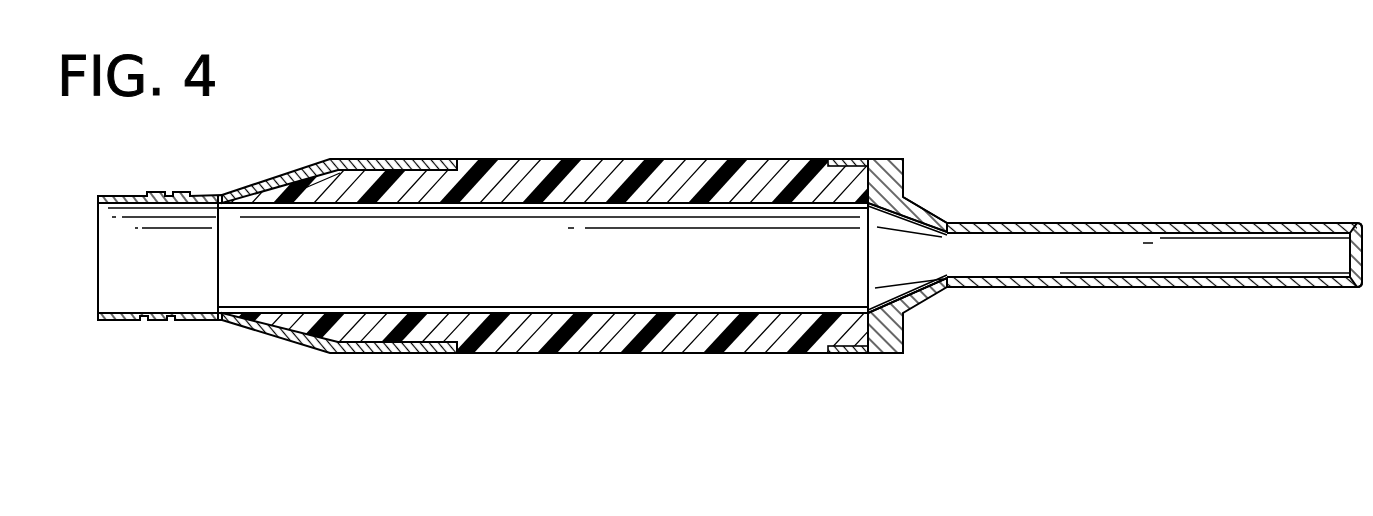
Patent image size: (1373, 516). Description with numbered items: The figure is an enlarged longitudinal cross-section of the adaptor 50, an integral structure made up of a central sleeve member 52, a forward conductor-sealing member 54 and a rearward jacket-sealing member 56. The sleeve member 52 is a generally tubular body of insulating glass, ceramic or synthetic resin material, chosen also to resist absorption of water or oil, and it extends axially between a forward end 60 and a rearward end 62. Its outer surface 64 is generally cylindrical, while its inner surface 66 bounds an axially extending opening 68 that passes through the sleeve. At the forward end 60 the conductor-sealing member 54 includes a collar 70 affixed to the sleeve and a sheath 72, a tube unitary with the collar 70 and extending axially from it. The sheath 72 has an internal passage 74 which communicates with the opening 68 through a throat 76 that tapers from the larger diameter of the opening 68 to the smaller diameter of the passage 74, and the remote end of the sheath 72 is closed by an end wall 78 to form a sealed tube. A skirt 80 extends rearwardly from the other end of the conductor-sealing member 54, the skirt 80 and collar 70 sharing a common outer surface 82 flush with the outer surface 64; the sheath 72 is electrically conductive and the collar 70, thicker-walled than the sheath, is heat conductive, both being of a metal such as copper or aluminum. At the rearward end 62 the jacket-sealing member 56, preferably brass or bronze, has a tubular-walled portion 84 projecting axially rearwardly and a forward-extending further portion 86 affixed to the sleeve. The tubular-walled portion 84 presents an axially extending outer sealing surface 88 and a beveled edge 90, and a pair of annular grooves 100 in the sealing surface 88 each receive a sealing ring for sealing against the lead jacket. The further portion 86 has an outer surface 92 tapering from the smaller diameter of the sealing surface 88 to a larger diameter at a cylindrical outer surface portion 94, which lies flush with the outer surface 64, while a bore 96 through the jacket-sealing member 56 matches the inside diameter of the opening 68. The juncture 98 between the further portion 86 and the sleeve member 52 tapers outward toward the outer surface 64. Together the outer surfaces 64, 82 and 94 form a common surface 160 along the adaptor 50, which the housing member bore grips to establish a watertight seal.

The adaptor 50 is at (579, 365).
The sleeve member 52 is at (703, 160).
The conductor-sealing member 54 is at (956, 220).
The jacket-sealing member 56 is at (211, 196).
The forward end 60 is at (579, 248).
The rearward end 62 is at (135, 258).
The outer surface 64 is at (525, 159).
The inner surface 66 is at (476, 209).
The opening 68 is at (557, 281).
The collar 70 is at (893, 168).
The sheath 72 is at (1154, 255).
The internal passage 74 is at (1108, 267).
The throat 76 is at (893, 295).
The end wall 78 is at (1348, 257).
The skirt 80 is at (846, 160).
The outer surface 82 is at (869, 158).
The tubular-walled portion 84 is at (191, 192).
The further portion 86 is at (359, 160).
The outer sealing surface 88 is at (155, 192).
The beveled edge 90 is at (108, 195).
The outer surface 92 is at (298, 172).
The cylindrical outer surface portion 94 is at (420, 159).
The bore 96 is at (136, 313).
The juncture 98 is at (344, 183).
The annular grooves 100 is at (171, 322).
The common surface 160 is at (626, 150).